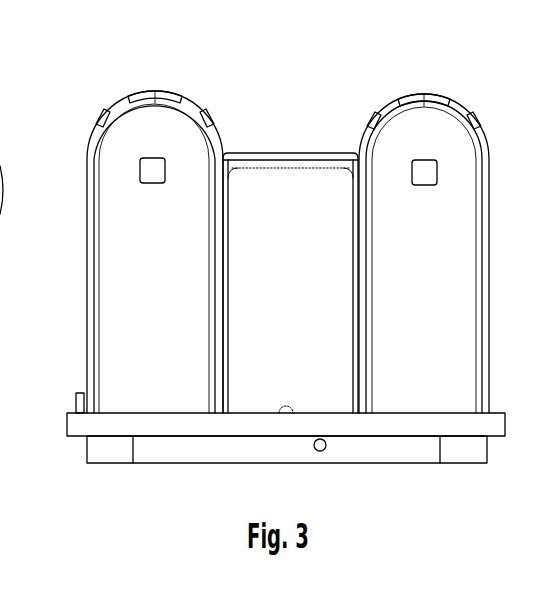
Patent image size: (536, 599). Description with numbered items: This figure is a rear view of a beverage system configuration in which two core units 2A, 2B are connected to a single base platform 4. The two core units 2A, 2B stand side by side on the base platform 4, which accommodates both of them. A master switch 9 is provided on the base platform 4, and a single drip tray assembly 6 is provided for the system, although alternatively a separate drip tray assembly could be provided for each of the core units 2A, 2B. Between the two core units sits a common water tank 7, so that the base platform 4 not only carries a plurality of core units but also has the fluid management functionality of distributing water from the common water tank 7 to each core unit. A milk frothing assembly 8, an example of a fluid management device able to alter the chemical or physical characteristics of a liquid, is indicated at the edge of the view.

The core unit 2A is at (80, 152).
The core unit 2B is at (494, 268).
The base platform 4 is at (86, 452).
The drip tray assembly 6 is at (75, 410).
The water tank 7 is at (282, 173).
The milk frothing assembly 8 is at (0, 63).
The master switch 9 is at (76, 391).